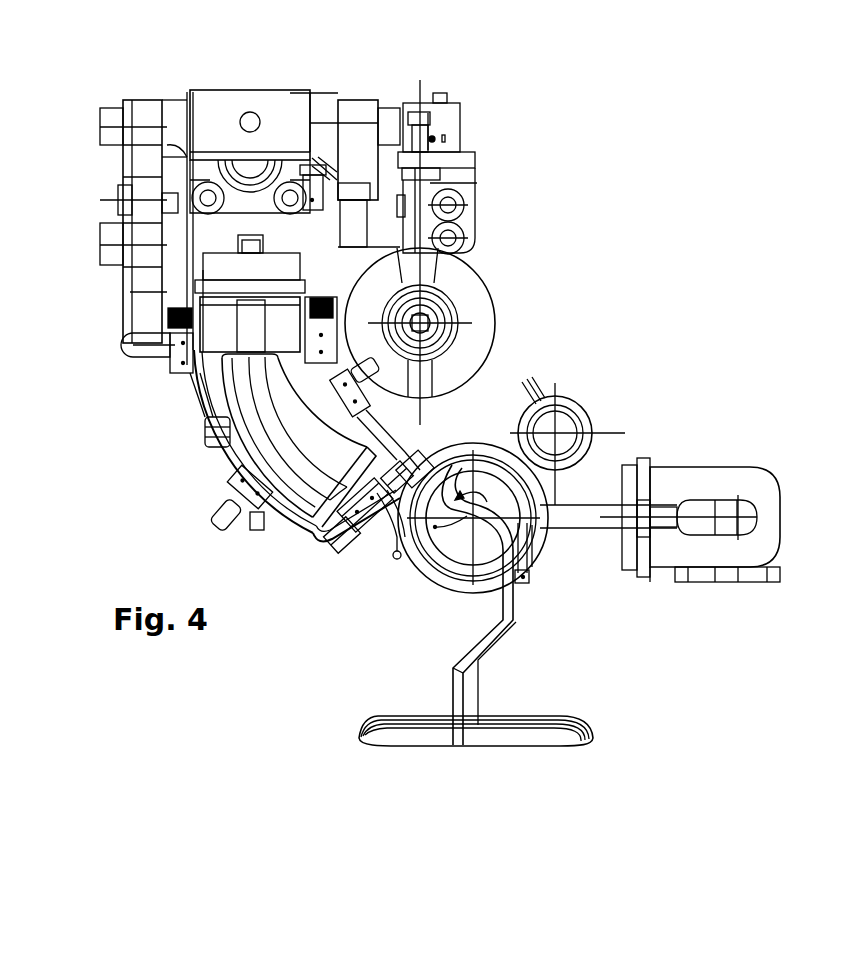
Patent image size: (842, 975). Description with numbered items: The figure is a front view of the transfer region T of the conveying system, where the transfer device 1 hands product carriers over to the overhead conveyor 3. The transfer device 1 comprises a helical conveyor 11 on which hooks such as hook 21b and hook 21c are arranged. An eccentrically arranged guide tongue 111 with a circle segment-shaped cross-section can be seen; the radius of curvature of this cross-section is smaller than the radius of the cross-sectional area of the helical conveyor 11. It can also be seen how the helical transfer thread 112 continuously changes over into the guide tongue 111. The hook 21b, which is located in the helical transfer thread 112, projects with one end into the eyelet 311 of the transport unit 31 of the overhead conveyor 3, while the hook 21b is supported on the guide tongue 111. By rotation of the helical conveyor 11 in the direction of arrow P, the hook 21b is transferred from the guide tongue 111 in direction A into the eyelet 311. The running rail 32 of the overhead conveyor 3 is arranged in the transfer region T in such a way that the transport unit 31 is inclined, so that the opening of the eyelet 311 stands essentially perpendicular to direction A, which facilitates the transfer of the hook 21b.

The transfer device 1 is at (422, 618).
The overhead conveyor 3 is at (163, 440).
The helical conveyor 11 is at (575, 573).
The transport unit 31 is at (328, 572).
The running rail 32 is at (257, 422).
The guide tongue 111 is at (463, 507).
The helical transfer thread 112 is at (483, 483).
The eyelet 311 is at (410, 575).
The hook 21b is at (488, 641).
The hook 21c is at (528, 575).
The direction A is at (388, 572).
The transfer region T is at (412, 603).
The arrow P is at (490, 486).